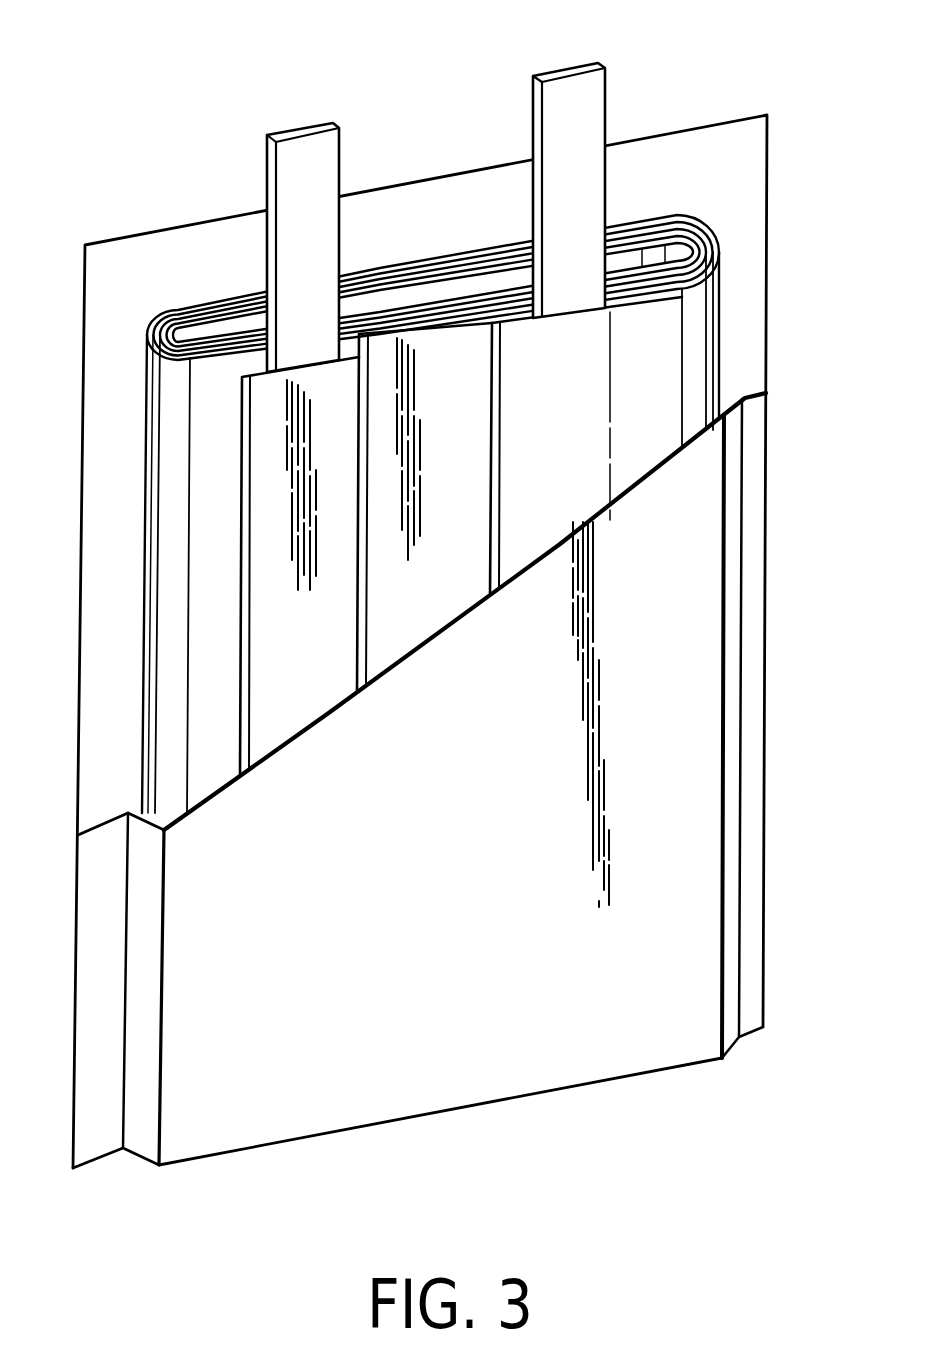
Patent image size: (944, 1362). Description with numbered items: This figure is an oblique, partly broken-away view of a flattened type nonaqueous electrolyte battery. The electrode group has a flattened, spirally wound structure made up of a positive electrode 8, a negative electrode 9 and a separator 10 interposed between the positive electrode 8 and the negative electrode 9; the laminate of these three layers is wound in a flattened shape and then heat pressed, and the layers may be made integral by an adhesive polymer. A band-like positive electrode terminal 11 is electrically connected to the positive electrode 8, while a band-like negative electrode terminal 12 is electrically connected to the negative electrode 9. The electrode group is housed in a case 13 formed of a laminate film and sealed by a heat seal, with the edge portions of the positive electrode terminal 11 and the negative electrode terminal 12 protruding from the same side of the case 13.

The positive electrode 8 is at (688, 352).
The negative electrode 9 is at (320, 562).
The separator 10 is at (460, 437).
The positive electrode terminal 11 is at (571, 95).
The negative electrode terminal 12 is at (301, 160).
The case 13 is at (675, 820).